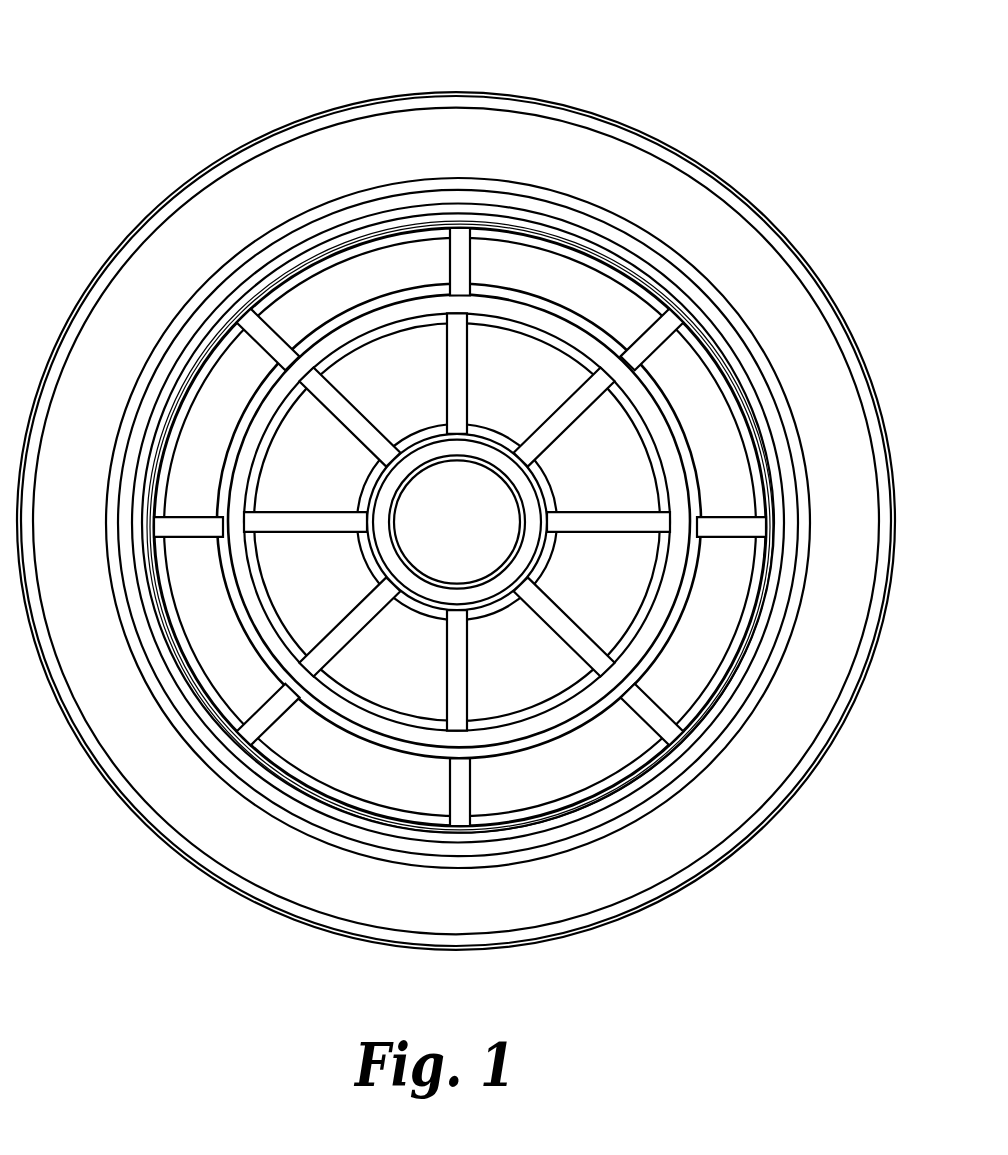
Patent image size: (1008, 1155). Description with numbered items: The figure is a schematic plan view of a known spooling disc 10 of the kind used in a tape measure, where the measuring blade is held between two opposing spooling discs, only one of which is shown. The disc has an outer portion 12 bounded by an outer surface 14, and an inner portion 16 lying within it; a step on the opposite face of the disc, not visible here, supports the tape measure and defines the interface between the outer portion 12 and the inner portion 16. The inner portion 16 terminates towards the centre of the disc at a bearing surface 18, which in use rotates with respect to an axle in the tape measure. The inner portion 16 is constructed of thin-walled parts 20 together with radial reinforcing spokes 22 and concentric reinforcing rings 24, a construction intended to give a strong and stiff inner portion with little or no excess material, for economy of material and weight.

The spooling disc 10 is at (620, 106).
The outer portion 12 is at (200, 228).
The outer surface 14 is at (295, 127).
The inner portion 16 is at (405, 247).
The bearing surface 18 is at (475, 462).
The thin-walled parts 20 is at (605, 425).
The reinforcing spokes 22 is at (628, 522).
The reinforcing rings 24 is at (420, 605).